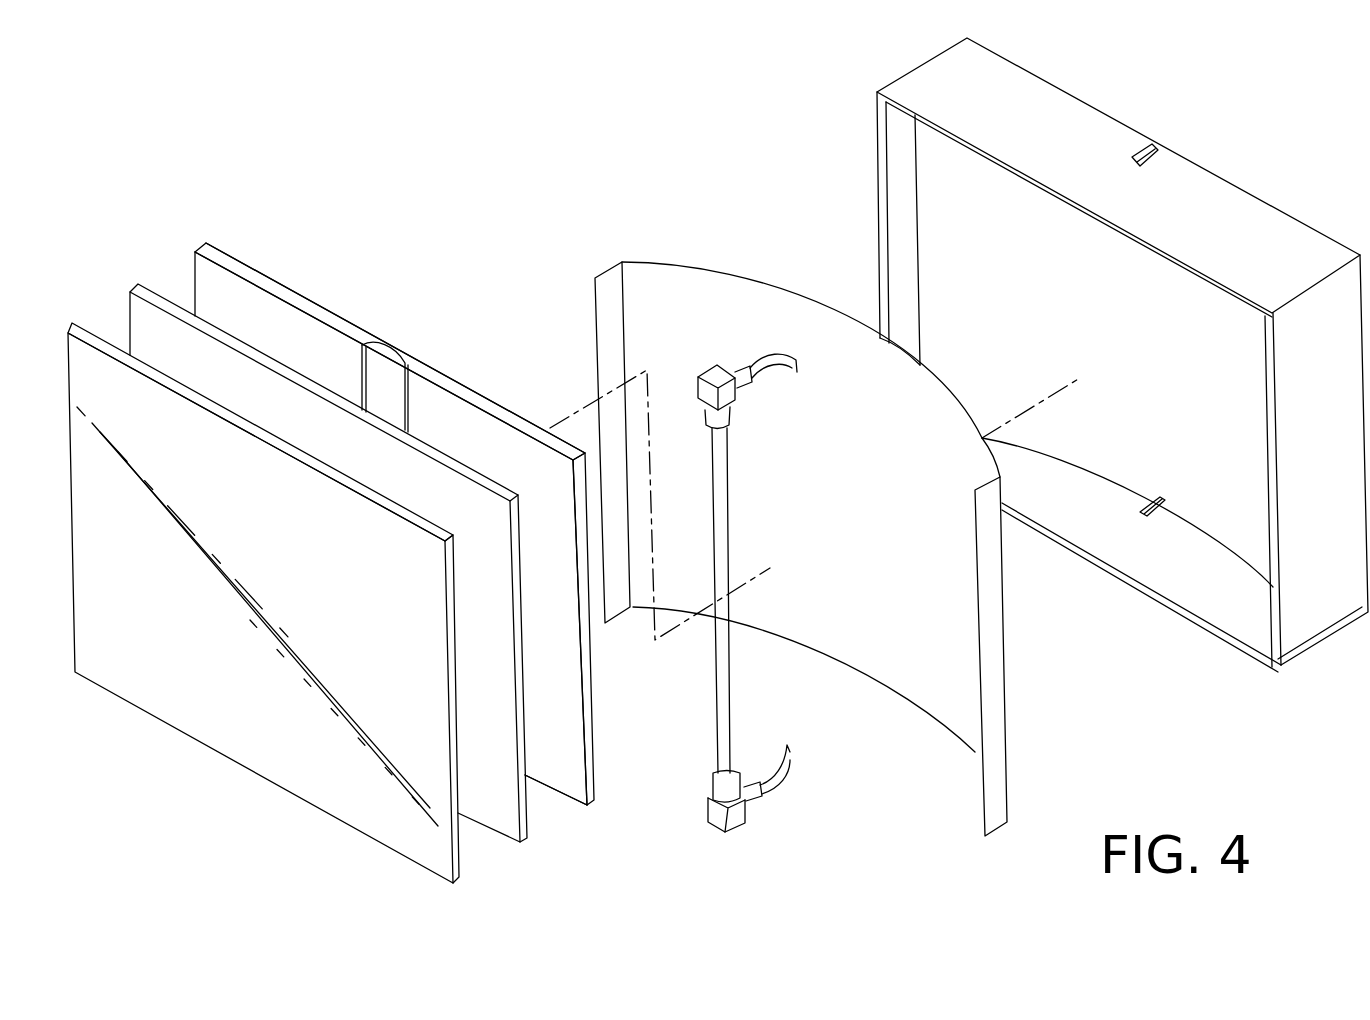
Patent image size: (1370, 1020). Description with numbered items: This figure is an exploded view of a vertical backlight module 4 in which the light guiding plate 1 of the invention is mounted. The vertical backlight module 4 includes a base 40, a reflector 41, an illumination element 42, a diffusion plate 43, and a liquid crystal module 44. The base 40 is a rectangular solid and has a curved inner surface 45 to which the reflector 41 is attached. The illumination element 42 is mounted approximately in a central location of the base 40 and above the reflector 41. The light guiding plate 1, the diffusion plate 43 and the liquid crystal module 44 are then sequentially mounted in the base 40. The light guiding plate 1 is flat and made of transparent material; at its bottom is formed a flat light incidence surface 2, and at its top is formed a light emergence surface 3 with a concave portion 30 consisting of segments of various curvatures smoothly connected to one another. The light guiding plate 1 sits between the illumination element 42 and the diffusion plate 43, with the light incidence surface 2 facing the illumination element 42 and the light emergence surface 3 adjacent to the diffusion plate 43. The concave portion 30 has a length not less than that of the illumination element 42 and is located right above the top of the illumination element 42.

The vertical backlight module 4 is at (266, 121).
The light guiding plate 1 is at (250, 270).
The light incidence surface 2 is at (410, 352).
The light emergence surface 3 is at (217, 287).
The concave portion 30 is at (385, 370).
The base 40 is at (1172, 167).
The reflector 41 is at (730, 310).
The illumination element 42 is at (720, 680).
The diffusion plate 43 is at (167, 326).
The liquid crystal module 44 is at (107, 368).
The curved inner surface 45 is at (932, 257).